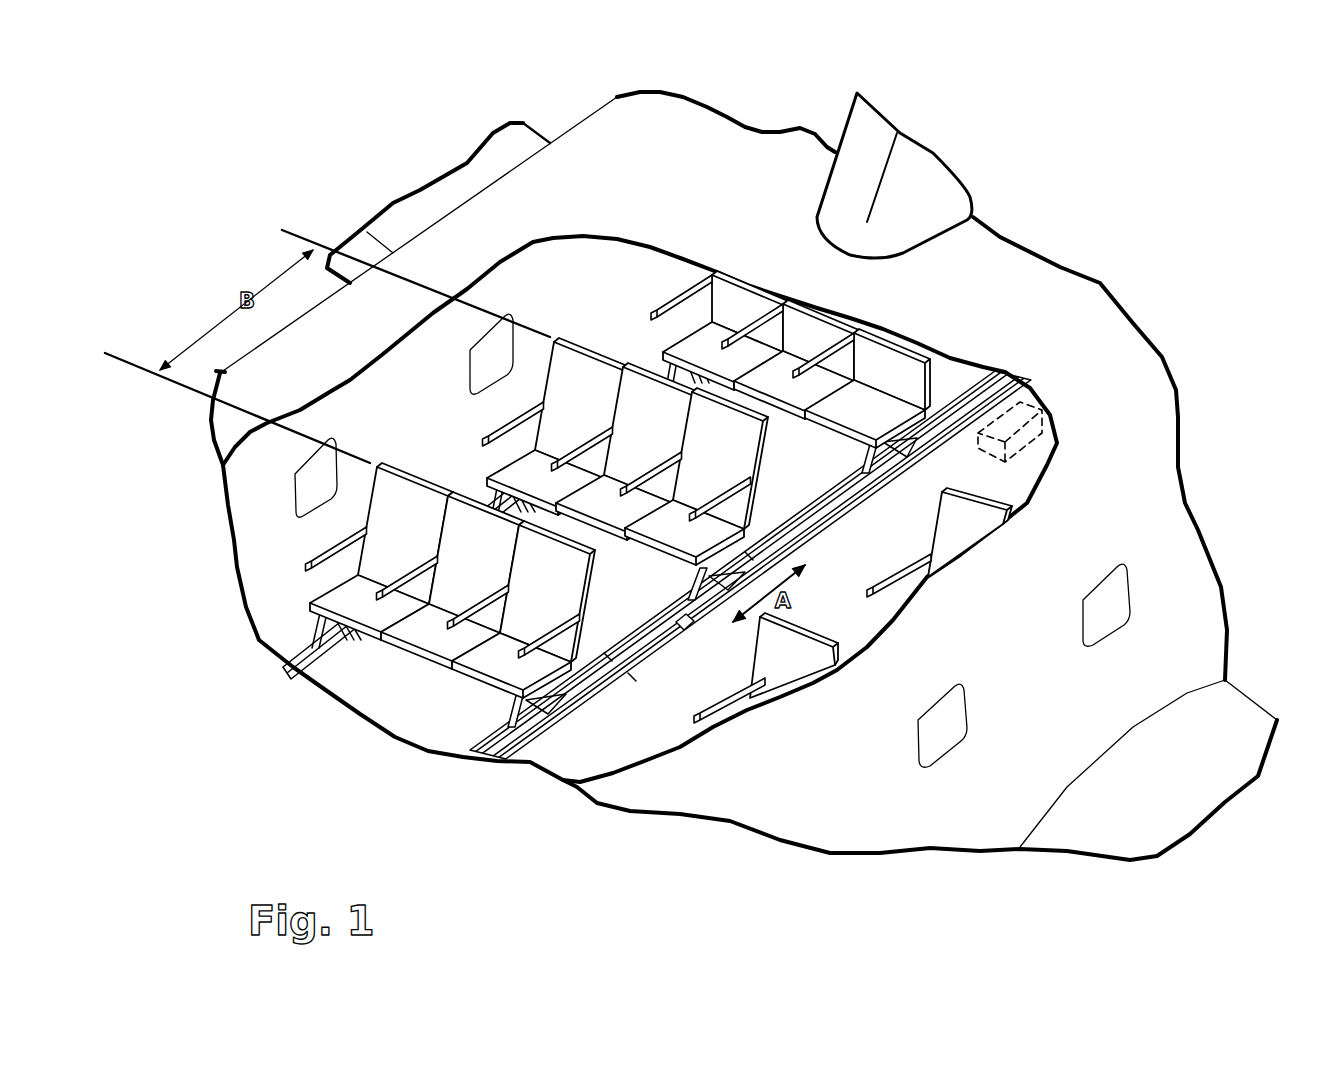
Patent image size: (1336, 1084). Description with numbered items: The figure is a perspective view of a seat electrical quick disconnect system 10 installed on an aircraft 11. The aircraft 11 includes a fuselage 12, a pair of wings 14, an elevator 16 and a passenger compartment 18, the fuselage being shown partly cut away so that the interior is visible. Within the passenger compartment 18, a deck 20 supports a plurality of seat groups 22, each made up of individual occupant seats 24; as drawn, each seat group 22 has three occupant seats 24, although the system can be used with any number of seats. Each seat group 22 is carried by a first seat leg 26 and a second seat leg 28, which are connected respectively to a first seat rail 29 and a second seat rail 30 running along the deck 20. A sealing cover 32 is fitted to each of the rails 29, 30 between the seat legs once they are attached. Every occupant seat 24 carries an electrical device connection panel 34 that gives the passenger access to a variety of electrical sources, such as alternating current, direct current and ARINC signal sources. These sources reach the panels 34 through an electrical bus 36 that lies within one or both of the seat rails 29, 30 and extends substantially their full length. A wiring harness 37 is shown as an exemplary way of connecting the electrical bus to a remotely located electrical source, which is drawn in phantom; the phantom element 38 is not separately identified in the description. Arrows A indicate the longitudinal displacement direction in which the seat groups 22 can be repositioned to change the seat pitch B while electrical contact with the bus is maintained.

The seat electrical quick disconnect system 10 is at (464, 727).
The aircraft 11 is at (403, 128).
The fuselage 12 is at (1153, 428).
The pair of wings 14 is at (1250, 722).
The elevator 16 is at (935, 195).
The passenger compartment 18 is at (250, 497).
The deck 20 is at (567, 753).
The seat group 22 is at (787, 397).
The individual occupant seat 24 is at (398, 462).
The first seat leg 26 is at (320, 628).
The second seat leg 28 is at (515, 705).
The first seat rail 29 is at (308, 692).
The second seat rail 30 is at (635, 640).
The sealing cover 32 is at (617, 680).
The electrical device connection panel 34 is at (325, 565).
The electrical bus 36 is at (687, 628).
The wiring harness 37 is at (967, 433).
The track module 38 is at (990, 448).